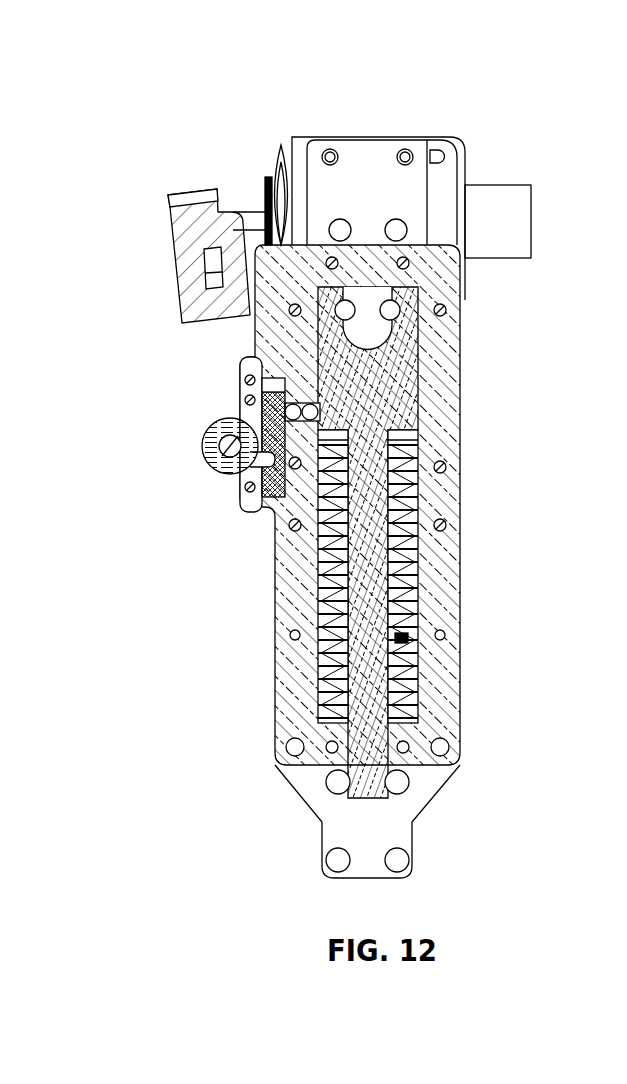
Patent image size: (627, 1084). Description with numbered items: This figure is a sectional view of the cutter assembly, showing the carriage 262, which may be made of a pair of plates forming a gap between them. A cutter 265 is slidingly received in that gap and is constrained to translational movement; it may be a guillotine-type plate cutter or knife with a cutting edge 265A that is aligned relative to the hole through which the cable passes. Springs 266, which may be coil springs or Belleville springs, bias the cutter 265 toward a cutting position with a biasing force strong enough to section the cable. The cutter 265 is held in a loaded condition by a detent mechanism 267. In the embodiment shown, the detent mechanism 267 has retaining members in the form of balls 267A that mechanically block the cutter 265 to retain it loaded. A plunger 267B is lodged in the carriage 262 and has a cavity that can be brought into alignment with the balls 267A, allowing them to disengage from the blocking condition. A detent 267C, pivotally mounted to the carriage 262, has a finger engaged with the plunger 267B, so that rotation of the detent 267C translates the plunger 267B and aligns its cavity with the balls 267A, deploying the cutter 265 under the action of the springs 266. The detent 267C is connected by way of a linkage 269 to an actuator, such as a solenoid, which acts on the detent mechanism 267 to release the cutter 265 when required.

The carriage 262 is at (462, 412).
The cutter 265 is at (375, 402).
The cutting edge 265A is at (368, 335).
The springs 266 is at (418, 653).
The detent mechanism 267 is at (188, 435).
The balls 267A is at (280, 402).
The plunger 267B is at (270, 498).
The detent 267C is at (213, 473).
The linkage 269 is at (170, 228).